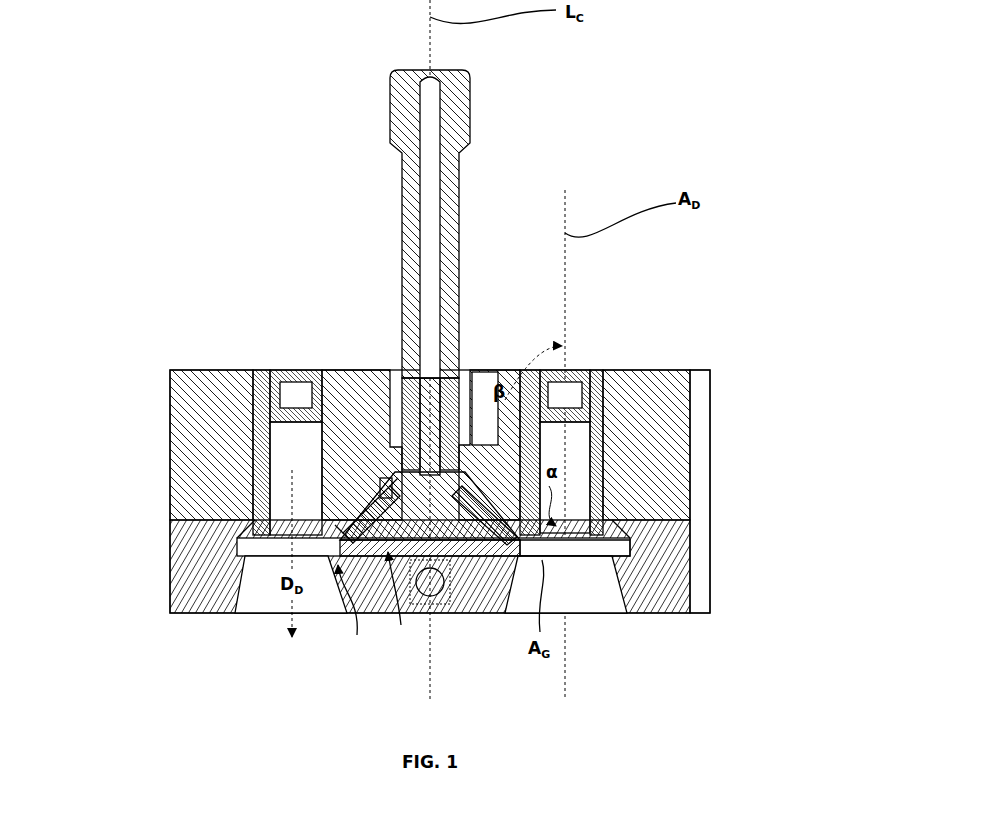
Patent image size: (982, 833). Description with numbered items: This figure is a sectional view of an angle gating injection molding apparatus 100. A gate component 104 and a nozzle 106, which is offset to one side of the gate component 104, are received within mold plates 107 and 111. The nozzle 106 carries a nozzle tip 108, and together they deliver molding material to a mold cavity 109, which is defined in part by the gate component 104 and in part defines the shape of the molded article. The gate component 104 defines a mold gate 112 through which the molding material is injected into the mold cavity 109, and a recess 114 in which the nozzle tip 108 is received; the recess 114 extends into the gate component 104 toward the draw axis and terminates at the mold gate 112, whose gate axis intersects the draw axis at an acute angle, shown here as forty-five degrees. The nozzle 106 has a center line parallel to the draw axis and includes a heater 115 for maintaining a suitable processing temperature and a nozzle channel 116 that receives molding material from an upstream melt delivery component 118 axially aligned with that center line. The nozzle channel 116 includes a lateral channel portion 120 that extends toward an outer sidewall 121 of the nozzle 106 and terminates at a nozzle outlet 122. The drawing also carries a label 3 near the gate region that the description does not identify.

The injection molding apparatus 100 is at (150, 663).
The gate component 104 is at (625, 538).
The nozzle 106 is at (399, 599).
The mold plate 107 is at (660, 600).
The nozzle tip 108 is at (351, 605).
The mold cavity 109 is at (296, 478).
The mold plate 111 is at (663, 392).
The mold gate 112 is at (332, 548).
The recess 114 is at (487, 531).
The heater 115 is at (392, 463).
The nozzle channel 116 is at (428, 475).
The upstream melt delivery component 118 is at (460, 178).
The lateral channel portion 120 is at (395, 480).
The outer sidewall 121 is at (378, 533).
The nozzle outlet 122 is at (388, 498).
The seat 3 is at (577, 560).